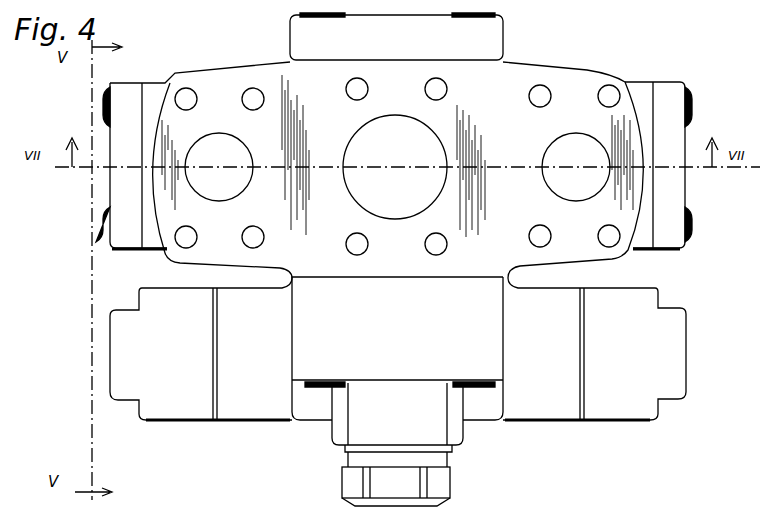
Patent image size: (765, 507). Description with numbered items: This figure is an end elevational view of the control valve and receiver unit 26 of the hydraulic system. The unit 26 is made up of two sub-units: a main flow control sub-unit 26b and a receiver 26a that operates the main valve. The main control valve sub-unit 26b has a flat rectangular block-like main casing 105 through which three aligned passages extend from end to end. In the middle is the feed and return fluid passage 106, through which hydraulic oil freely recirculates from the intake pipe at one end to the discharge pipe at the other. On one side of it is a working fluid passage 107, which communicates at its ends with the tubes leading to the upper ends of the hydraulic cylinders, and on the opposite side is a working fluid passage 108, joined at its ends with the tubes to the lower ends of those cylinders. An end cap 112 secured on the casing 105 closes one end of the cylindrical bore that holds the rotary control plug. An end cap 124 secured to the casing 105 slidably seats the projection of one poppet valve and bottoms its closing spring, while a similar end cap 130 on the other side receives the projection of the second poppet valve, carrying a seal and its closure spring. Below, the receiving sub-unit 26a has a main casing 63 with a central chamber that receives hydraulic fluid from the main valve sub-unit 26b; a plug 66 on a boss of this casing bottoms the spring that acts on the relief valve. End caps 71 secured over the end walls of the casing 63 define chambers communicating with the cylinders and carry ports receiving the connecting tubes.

The control valve and receiver unit 26 is at (560, 13).
The receiver 26a is at (256, 408).
The main flow control sub-unit 26b is at (585, 89).
The main casing 63 is at (541, 388).
The plug 66 is at (440, 484).
The end caps 71 is at (398, 367).
The main casing 105 is at (620, 100).
The middle feed and return fluid passage 106 is at (418, 212).
The working fluid passage 107 is at (234, 197).
The working fluid passage 108 is at (582, 182).
The end cap 112 is at (330, 40).
The end cap 124 is at (122, 192).
The end cap 130 is at (677, 147).